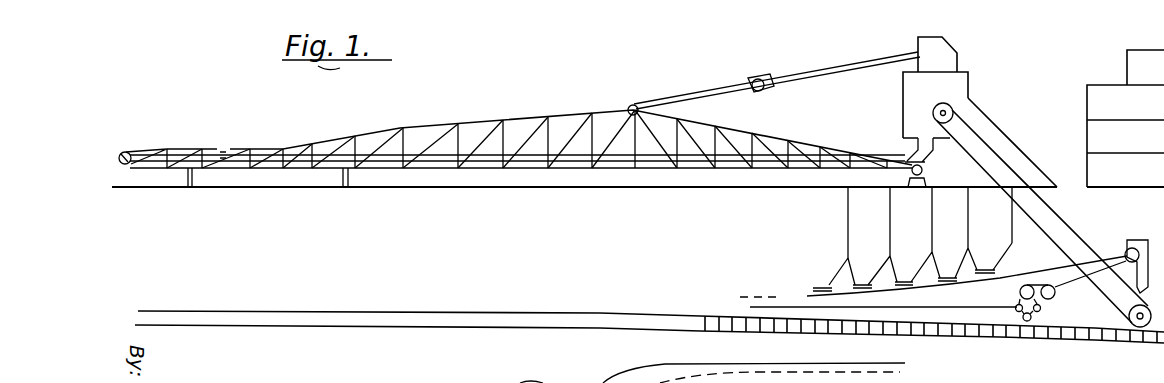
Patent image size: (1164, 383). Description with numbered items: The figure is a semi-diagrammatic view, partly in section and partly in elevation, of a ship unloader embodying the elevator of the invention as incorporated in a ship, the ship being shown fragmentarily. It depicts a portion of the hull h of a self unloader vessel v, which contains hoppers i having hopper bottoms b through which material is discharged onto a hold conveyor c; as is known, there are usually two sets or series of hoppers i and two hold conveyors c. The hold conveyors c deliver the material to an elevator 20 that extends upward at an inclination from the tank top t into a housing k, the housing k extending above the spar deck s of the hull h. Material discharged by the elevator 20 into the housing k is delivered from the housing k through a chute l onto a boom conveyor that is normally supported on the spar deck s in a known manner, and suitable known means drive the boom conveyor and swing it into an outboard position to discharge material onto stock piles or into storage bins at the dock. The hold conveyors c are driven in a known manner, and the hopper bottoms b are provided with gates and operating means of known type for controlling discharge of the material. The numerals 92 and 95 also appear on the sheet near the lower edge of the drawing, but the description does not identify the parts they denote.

The hold conveyor c is at (513, 110).
The spar deck s is at (497, 190).
The chute l is at (907, 148).
The housing k is at (992, 120).
The self unloader vessel v is at (1058, 172).
The elevator 20 is at (1077, 225).
The hoppers i is at (860, 213).
The hopper bottoms b is at (871, 276).
The hull h is at (235, 277).
The tank top t is at (1068, 325).
The drum 92 is at (668, 362).
The drum part 95 is at (926, 374).